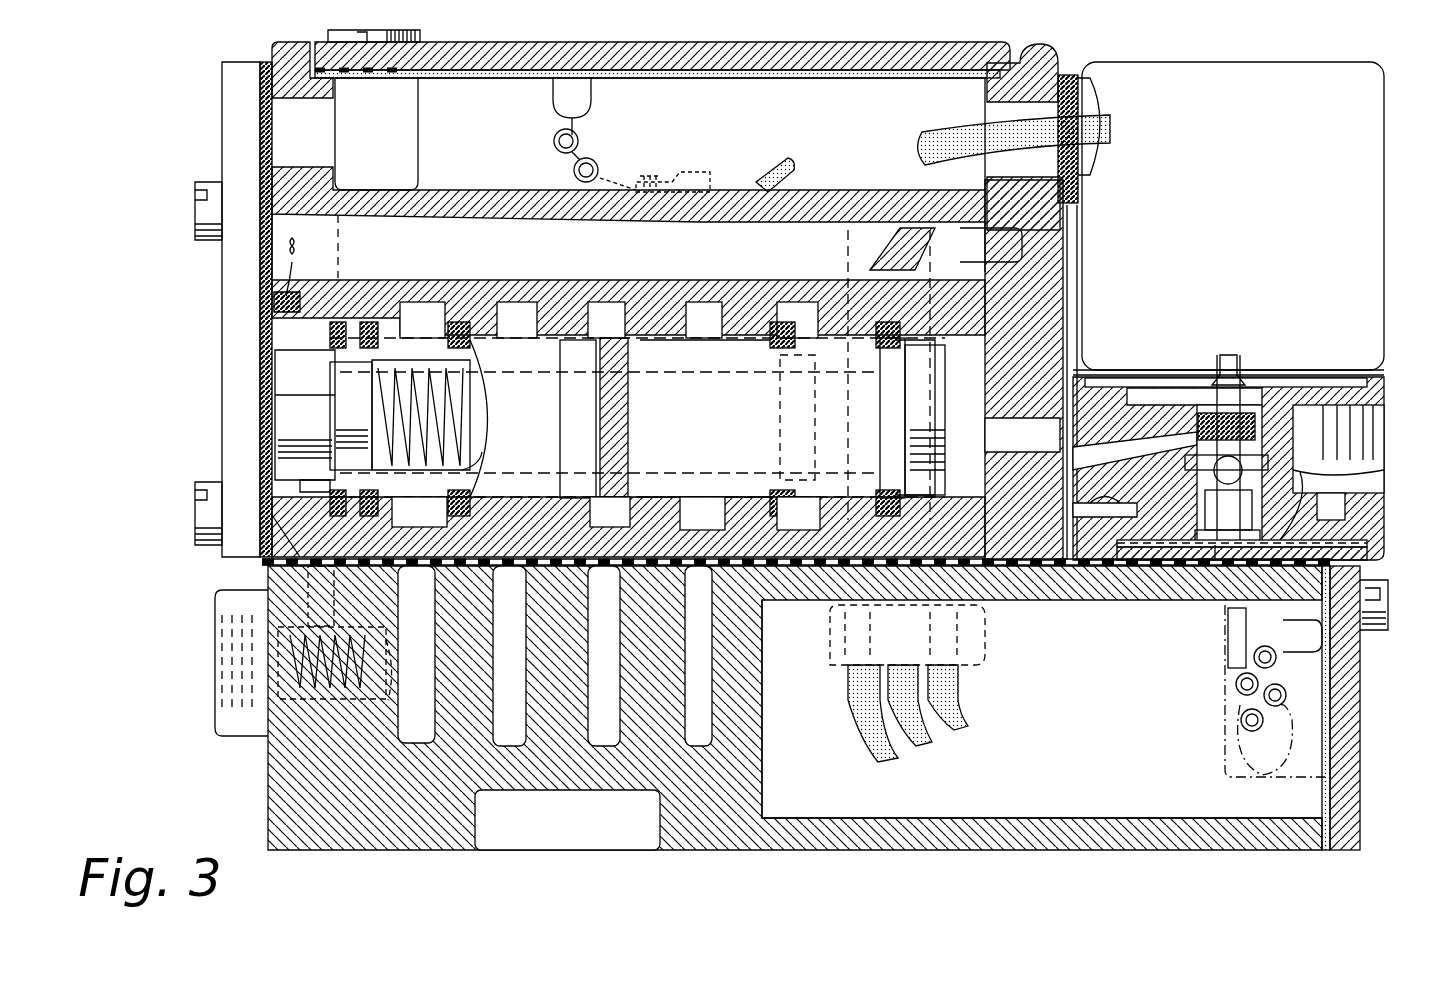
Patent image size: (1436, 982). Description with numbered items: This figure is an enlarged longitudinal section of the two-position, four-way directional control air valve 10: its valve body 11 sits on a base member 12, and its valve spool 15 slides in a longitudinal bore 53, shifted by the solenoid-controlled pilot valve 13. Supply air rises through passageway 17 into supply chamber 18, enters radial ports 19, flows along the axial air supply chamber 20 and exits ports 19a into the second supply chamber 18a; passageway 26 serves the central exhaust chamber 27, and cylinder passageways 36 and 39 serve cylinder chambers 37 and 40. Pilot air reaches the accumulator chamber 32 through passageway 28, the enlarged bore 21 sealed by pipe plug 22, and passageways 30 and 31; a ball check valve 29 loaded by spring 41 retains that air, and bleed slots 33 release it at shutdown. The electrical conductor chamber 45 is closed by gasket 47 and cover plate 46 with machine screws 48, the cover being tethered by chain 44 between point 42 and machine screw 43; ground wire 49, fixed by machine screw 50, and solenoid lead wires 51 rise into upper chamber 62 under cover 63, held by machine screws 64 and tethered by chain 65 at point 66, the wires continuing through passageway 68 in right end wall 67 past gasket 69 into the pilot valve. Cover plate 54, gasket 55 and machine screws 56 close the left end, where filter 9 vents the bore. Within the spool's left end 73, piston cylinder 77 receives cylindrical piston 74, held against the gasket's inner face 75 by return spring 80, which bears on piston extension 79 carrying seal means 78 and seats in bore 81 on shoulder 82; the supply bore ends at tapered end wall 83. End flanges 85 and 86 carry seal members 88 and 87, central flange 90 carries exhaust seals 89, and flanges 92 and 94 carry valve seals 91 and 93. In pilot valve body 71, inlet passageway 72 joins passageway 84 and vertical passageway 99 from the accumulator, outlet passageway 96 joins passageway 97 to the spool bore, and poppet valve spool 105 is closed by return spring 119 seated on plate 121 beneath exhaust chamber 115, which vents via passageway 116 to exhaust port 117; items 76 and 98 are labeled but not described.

The filter 9 is at (270, 298).
The directional control air valve 10 is at (205, 270).
The valve body 11 is at (290, 562).
The base member 12 is at (276, 788).
The solenoid controlled three-way pilot valve 13 is at (1365, 178).
The valve spool 15 is at (735, 355).
The air supply passageway 17 is at (433, 704).
The pressurized air supply chamber 18 is at (420, 300).
The second supply chamber 18a is at (790, 302).
The radial ports 19 is at (410, 318).
The second radial ports 19a is at (816, 470).
The internal axial air supply chamber 20 is at (558, 350).
The enlarged diameter passageway 21 is at (308, 700).
The pipe plug 22 is at (220, 662).
The exhaust passageway 26 is at (628, 696).
The exhaust chamber 27 is at (607, 302).
The passageway 28 is at (408, 660).
The ball check valve 29 is at (378, 730).
The passageway 30 is at (334, 604).
The passageway 31 is at (330, 575).
The accumulator chamber 32 is at (438, 215).
The bleed slots 33 is at (386, 682).
The cylinder passageway 36 is at (530, 634).
The cylinder chamber 37 is at (514, 302).
The cylinder passageway 39 is at (690, 740).
The cylinder chamber 40 is at (700, 302).
The spring 41 is at (322, 700).
The securing point 42 is at (1300, 625).
The machine screw 43 is at (1228, 660).
The retainer chain 44 is at (1228, 720).
The electrical conductor chamber 45 is at (1026, 818).
The cover plate 46 is at (1345, 782).
The gasket 47 is at (1330, 710).
The machine screws 48 is at (1386, 590).
The ground wire 49 is at (770, 178).
The machine screw 50 is at (660, 178).
The solenoid lead wires 51 is at (948, 134).
The valve spool bore 53 is at (288, 318).
The cover plate 54 is at (228, 302).
The gasket 55 is at (262, 358).
The machine screws 56 is at (196, 198).
The upper chamber 62 is at (405, 97).
The cover 63 is at (840, 68).
The machine screws 64 is at (395, 33).
The retainer chain 65 is at (596, 128).
The securing point 66 is at (556, 95).
The right end wall 67 is at (1014, 72).
The passageway 68 is at (1036, 100).
The gasket 69 is at (1050, 570).
The pilot valve body 71 is at (1110, 395).
The pilot air inlet passageway 72 is at (1125, 400).
The left end of valve spool 73 is at (412, 520).
The cylindrical piston 74 is at (290, 406).
The inner face of cover plate gasket 75 is at (272, 530).
The wall 76 is at (1010, 395).
The piston cylinder 77 is at (275, 355).
The seal means 78 is at (628, 307).
The piston extension 79 is at (336, 390).
The return spring 80 is at (455, 418).
The bore 81 is at (490, 432).
The shoulder 82 is at (480, 462).
The tapered end wall 83 is at (880, 410).
The passageway 84 is at (1028, 418).
The peripheral flange 85 is at (320, 490).
The peripheral flange 86 is at (907, 635).
The annular seal members 87 is at (905, 268).
The annular seal members 88 is at (380, 512).
The annular seal member 89 is at (612, 562).
The central peripheral flange 90 is at (628, 404).
The annular valve seal 91 is at (411, 578).
The radial flange 92 is at (466, 562).
The annular valve seal 93 is at (796, 518).
The second radial flange 94 is at (756, 562).
The pilot air outlet passageway 96 is at (1090, 570).
The passageway 97 is at (1044, 500).
The passage 98 is at (996, 505).
The vertical passageway 99 is at (1070, 278).
The poppet valve spool 105 is at (1226, 358).
The exhaust chamber 115 is at (1345, 518).
The passageway 116 is at (1312, 478).
The exhaust port 117 is at (1375, 414).
The return spring 119 is at (1220, 560).
The plate 121 is at (1360, 550).